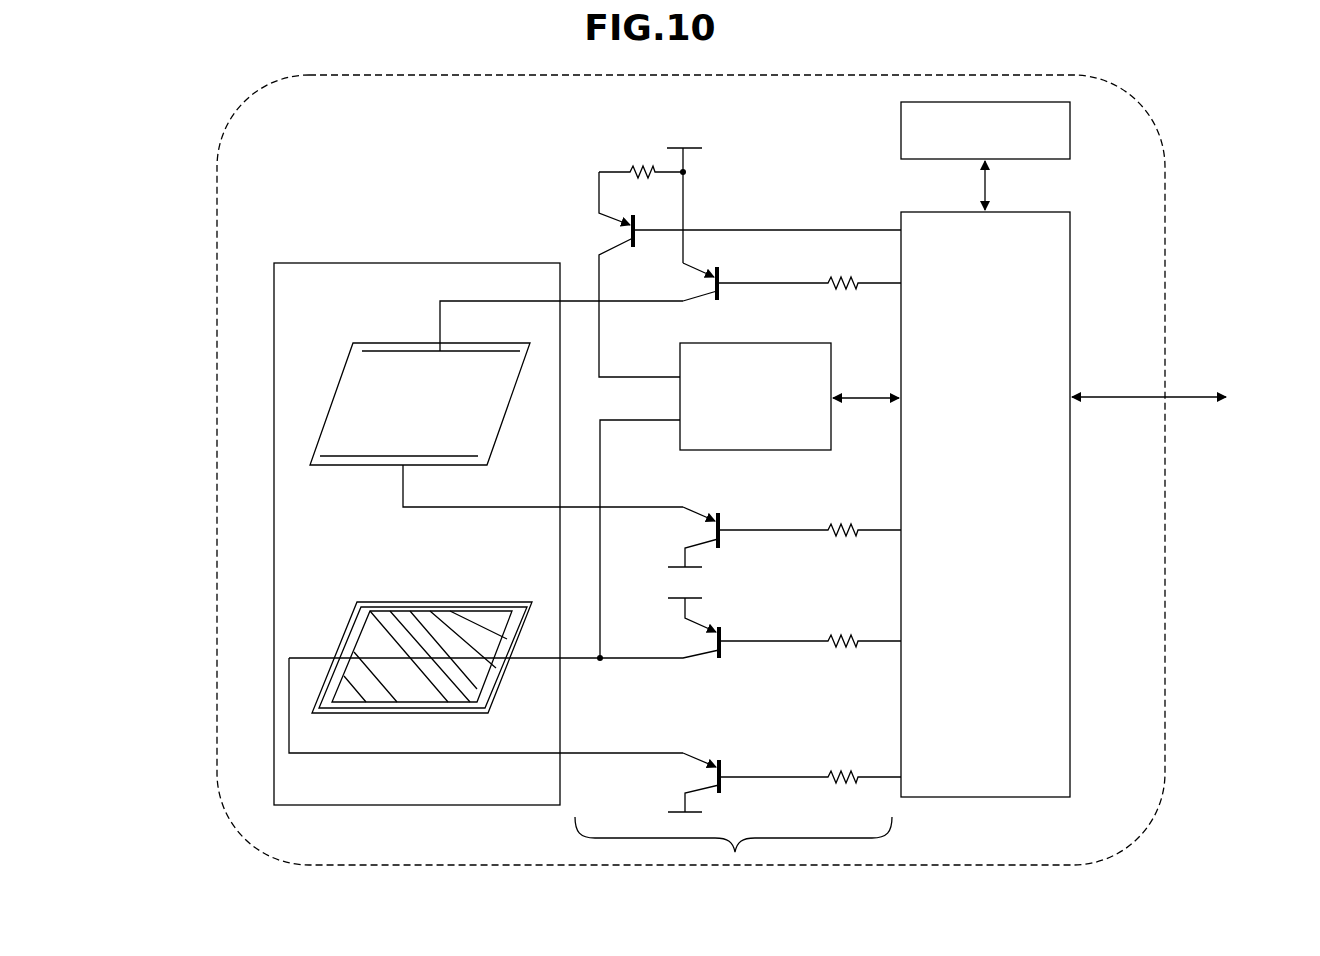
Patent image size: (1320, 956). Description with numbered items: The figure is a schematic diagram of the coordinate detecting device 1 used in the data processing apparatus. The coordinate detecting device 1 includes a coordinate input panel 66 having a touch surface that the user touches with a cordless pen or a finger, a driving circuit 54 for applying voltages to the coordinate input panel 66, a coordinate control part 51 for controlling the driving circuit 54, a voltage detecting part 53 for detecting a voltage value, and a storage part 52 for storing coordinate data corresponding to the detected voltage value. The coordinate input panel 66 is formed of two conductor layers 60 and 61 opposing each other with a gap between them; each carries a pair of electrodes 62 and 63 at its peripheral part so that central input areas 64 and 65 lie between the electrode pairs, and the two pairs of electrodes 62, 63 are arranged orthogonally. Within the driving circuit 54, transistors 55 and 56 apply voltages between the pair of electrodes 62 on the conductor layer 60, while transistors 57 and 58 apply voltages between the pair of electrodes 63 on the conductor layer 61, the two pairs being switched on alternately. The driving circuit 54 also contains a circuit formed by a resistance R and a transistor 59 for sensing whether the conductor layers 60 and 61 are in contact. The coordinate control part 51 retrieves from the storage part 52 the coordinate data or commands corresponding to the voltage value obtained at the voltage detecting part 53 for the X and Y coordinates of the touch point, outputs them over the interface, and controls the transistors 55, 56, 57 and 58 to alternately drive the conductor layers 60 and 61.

The coordinate detecting device 1 is at (1030, 890).
The coordinate control part 51 is at (1071, 537).
The storage part 52 is at (901, 131).
The voltage detecting part 53 is at (765, 450).
The driving circuit 54 is at (735, 852).
The transistor 55 is at (712, 270).
The transistor 56 is at (722, 540).
The transistor 57 is at (723, 645).
The transistor 58 is at (712, 779).
The transistor 59 is at (612, 236).
The conductor layer 60 is at (331, 406).
The conductor layer 61 is at (340, 632).
The pair of electrodes 62 is at (406, 343).
The pair of electrodes 63 is at (359, 609).
The central input area 64 is at (347, 366).
The central input area 65 is at (401, 692).
The coordinate input panel 66 is at (300, 263).